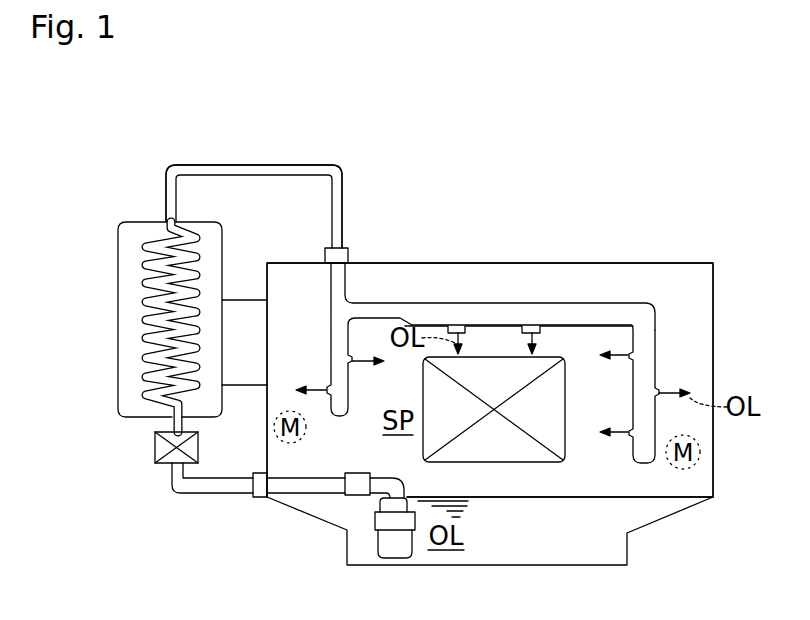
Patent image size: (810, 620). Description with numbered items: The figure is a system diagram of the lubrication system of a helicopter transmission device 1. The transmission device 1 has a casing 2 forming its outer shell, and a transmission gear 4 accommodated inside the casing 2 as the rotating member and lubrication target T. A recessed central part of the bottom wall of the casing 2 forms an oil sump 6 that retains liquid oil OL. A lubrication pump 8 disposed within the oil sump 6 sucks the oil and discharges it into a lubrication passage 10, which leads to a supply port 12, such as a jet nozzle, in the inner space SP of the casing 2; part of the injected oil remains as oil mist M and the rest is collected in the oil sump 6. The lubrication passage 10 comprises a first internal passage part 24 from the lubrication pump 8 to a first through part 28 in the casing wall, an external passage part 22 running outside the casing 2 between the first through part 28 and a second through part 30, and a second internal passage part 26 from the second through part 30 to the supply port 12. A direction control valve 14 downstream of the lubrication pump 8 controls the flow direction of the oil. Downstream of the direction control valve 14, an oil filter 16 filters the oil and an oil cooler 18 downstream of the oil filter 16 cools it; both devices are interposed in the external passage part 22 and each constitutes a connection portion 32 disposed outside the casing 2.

The transmission device 1 is at (562, 131).
The casing 2 is at (444, 256).
The transmission gear 4 is at (528, 462).
The oil sump 6 is at (478, 548).
The lubrication pump 8 is at (388, 553).
The lubrication passage 10 is at (160, 158).
The supply port 12 is at (326, 386).
The direction control valve 14 is at (356, 490).
The oil filter 16 is at (160, 465).
The oil cooler 18 is at (130, 220).
The external passage part 22 is at (198, 494).
The first internal passage part 24 is at (287, 489).
The second internal passage part 26 is at (405, 303).
The first through part 28 is at (262, 498).
The second through part 30 is at (327, 248).
The connection portion 32 is at (217, 345).